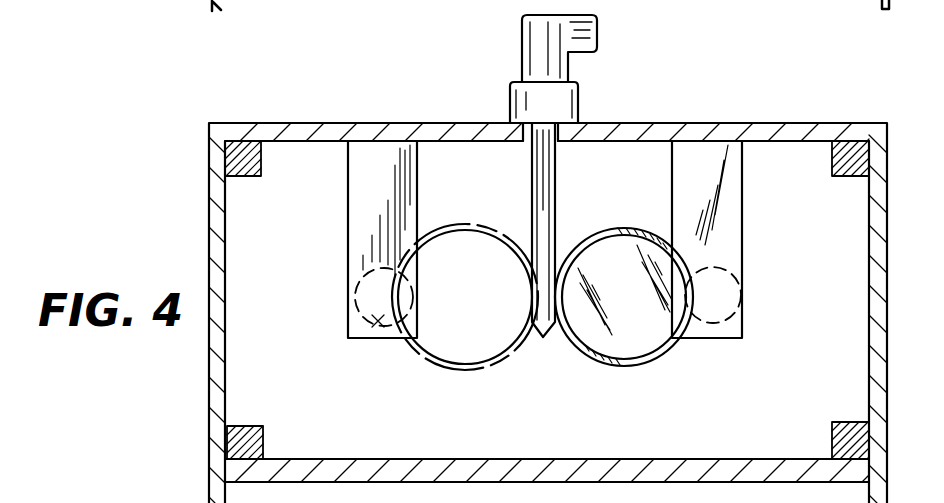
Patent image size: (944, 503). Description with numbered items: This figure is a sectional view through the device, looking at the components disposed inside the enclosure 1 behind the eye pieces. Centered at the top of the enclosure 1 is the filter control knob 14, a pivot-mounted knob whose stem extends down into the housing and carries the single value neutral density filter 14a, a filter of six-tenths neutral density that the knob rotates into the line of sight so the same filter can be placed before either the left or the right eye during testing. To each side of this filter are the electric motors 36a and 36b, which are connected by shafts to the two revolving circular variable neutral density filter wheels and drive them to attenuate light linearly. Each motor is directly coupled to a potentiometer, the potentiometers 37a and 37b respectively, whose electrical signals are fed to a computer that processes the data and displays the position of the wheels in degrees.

The enclosure 1 is at (206, 411).
The filter control knob 14 is at (535, 52).
The single value neutral density filter 14a is at (663, 340).
The electric motor 36a is at (327, 251).
The potentiometer 37a is at (352, 344).
The electric motor 36b is at (742, 239).
The potentiometer 37b is at (771, 282).